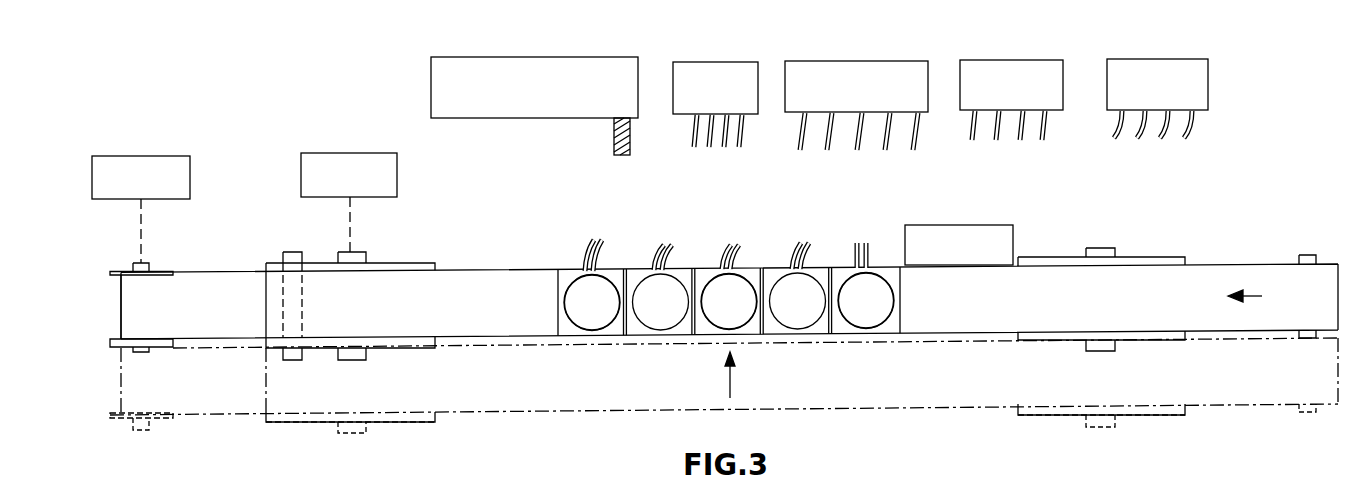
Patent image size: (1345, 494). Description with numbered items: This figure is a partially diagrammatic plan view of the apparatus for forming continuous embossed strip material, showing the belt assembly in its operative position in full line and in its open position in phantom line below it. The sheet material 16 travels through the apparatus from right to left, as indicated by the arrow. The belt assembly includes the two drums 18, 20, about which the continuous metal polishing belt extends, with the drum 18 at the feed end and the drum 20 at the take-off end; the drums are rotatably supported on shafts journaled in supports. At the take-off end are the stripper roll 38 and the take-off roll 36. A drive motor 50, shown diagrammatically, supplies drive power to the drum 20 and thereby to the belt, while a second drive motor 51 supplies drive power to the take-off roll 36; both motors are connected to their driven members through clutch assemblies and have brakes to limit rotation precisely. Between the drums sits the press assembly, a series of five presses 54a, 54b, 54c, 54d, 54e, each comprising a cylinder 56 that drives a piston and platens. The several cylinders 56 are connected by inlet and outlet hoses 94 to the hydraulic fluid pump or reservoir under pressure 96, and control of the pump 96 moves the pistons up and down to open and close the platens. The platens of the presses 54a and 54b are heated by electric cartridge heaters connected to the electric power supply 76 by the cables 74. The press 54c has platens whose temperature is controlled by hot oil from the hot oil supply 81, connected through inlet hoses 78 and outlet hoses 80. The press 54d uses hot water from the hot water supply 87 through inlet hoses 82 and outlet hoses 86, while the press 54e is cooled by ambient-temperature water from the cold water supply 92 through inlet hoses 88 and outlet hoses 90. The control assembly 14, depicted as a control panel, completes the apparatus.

The control assembly 14 is at (1019, 232).
The sheet material 16 is at (1258, 262).
The drum 18 is at (1177, 257).
The drum 20 is at (407, 262).
The take-off roll 36 is at (160, 271).
The stripper roll 38 is at (292, 252).
The drive motor 50 is at (348, 153).
The drive motor 51 is at (148, 156).
The press 54a is at (842, 261).
The press 54b is at (774, 262).
The press 54c is at (706, 262).
The press 54d is at (641, 262).
The press 54e is at (570, 262).
The cylinder 56 is at (588, 328).
The cable 74 is at (614, 137).
The electric power supply 76 is at (603, 57).
The inlet hose 78 is at (724, 149).
The outlet hose 80 is at (694, 149).
The hot oil supply 81 is at (722, 62).
The inlet hose 82 is at (972, 142).
The outlet hose 86 is at (1020, 142).
The hot water supply 87 is at (1040, 60).
The inlet hose 88 is at (1160, 140).
The outlet hose 90 is at (1114, 140).
The cold water supply 92 is at (1188, 59).
The inlet and outlet hoses 94 is at (800, 152).
The hydraulic fluid pump or reservoir 96 is at (900, 61).